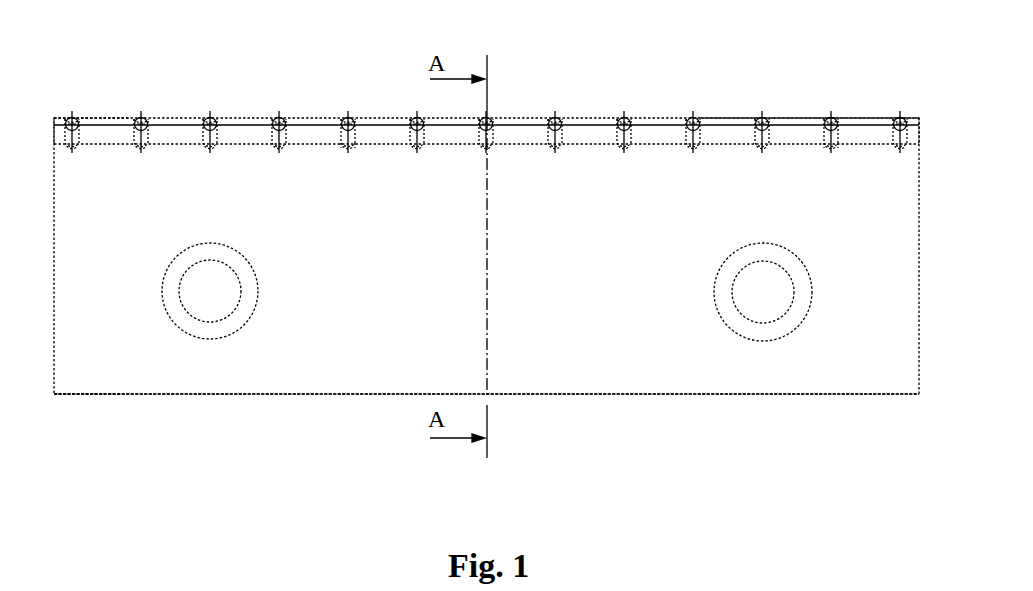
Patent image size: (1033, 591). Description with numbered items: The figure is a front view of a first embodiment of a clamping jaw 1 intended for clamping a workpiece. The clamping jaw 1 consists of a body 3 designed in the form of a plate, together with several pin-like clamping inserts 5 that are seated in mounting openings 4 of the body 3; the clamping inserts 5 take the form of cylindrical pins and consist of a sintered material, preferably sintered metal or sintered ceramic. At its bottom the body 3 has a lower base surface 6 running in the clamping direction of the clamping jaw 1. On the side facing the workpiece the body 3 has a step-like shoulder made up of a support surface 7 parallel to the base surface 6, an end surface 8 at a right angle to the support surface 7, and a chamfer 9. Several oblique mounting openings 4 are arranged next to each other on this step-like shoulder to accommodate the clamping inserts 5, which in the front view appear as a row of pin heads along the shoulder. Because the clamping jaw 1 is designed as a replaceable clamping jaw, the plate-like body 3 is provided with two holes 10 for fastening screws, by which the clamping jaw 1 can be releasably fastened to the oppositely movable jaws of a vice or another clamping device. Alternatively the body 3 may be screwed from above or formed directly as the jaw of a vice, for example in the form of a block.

The clamping jaw 1 is at (217, 408).
The body 3 is at (577, 192).
The mounting openings 4 is at (350, 143).
The clamping inserts 5 is at (349, 118).
The base surface 6 is at (606, 395).
The support surface 7 is at (731, 145).
The end surface 8 is at (243, 118).
The chamfer 9 is at (115, 118).
The holes 10 is at (210, 293).